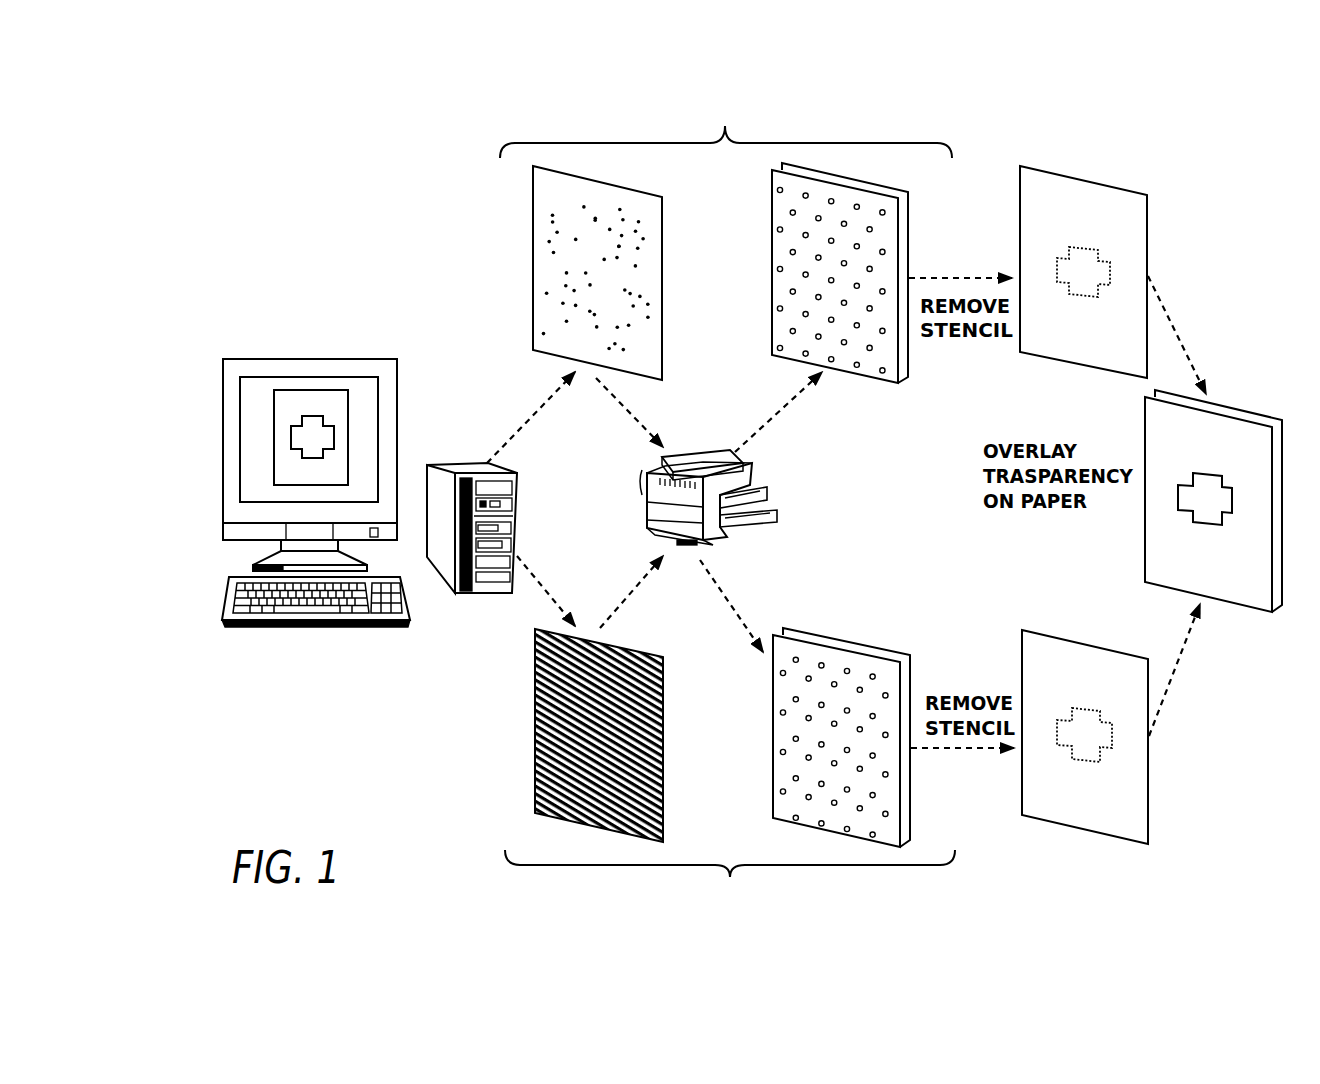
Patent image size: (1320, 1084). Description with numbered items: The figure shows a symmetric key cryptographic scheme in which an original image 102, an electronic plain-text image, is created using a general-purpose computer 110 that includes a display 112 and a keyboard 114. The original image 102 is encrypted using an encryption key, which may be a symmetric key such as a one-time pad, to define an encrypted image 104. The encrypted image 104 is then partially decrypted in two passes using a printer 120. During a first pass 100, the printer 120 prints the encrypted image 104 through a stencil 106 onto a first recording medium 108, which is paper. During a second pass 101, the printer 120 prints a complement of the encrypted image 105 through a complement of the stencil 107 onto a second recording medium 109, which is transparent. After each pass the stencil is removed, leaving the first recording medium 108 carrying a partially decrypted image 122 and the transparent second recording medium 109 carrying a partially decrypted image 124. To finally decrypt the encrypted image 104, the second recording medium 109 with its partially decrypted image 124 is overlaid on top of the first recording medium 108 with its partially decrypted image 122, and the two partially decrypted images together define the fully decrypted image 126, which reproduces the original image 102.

The first pass 100 is at (920, 141).
The second pass 101 is at (955, 855).
The original image 102 is at (337, 433).
The encrypted image 104 is at (634, 187).
The complement of the encrypted image 105 is at (634, 652).
The stencil 106 is at (772, 281).
The complement of the stencil 107 is at (773, 723).
The first recording medium 108 is at (908, 209).
The second recording medium 109 is at (910, 666).
The general-purpose computer 110 is at (508, 472).
The display 112 is at (373, 359).
The keyboard 114 is at (306, 628).
The printer 120 is at (745, 466).
The partially decrypted image 122 is at (1082, 247).
The partially decrypted image 124 is at (1082, 708).
The fully decrypted image 126 is at (1208, 473).